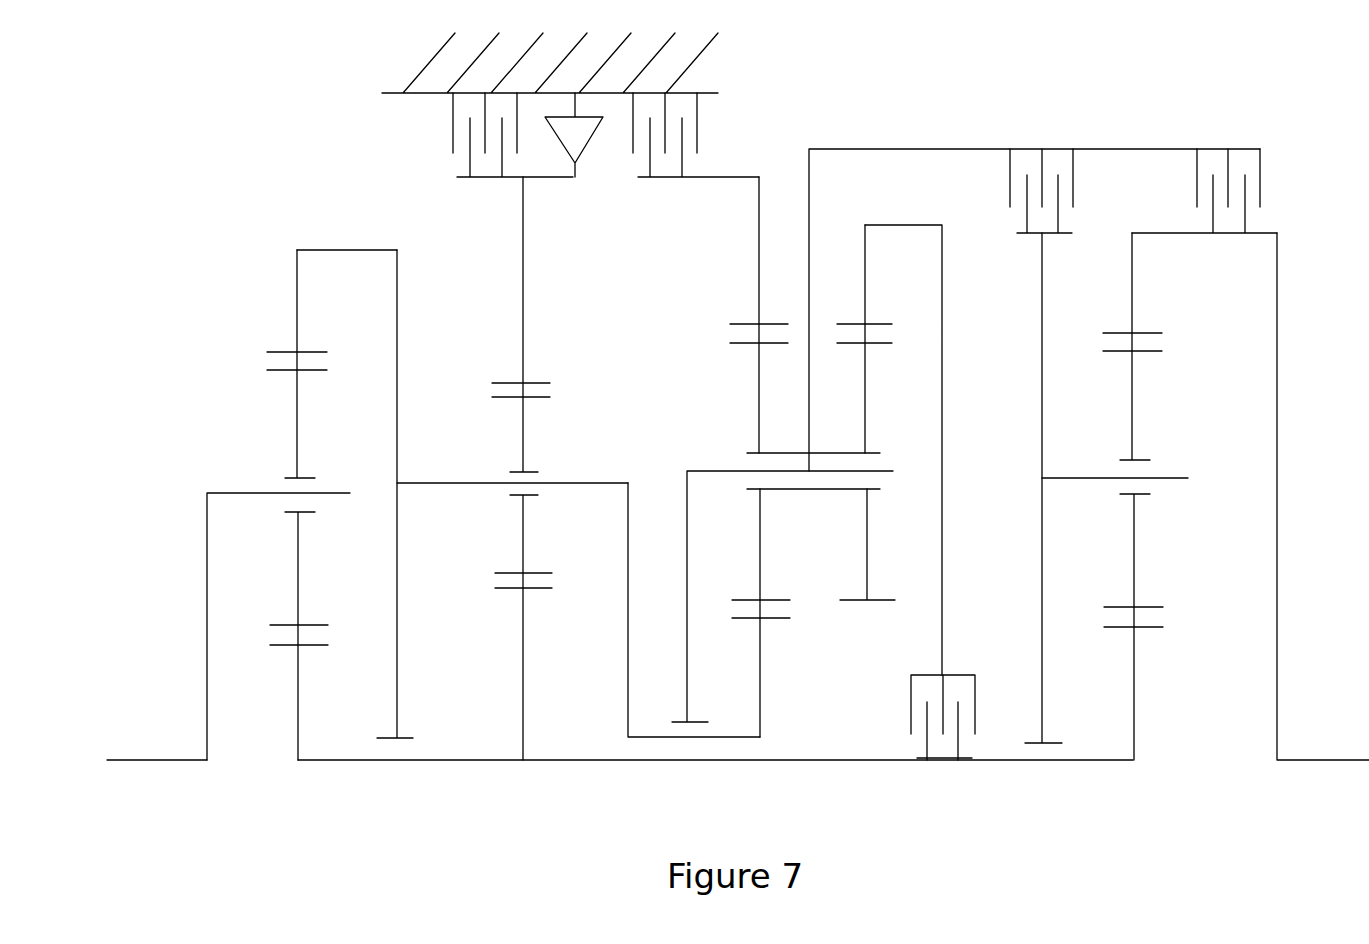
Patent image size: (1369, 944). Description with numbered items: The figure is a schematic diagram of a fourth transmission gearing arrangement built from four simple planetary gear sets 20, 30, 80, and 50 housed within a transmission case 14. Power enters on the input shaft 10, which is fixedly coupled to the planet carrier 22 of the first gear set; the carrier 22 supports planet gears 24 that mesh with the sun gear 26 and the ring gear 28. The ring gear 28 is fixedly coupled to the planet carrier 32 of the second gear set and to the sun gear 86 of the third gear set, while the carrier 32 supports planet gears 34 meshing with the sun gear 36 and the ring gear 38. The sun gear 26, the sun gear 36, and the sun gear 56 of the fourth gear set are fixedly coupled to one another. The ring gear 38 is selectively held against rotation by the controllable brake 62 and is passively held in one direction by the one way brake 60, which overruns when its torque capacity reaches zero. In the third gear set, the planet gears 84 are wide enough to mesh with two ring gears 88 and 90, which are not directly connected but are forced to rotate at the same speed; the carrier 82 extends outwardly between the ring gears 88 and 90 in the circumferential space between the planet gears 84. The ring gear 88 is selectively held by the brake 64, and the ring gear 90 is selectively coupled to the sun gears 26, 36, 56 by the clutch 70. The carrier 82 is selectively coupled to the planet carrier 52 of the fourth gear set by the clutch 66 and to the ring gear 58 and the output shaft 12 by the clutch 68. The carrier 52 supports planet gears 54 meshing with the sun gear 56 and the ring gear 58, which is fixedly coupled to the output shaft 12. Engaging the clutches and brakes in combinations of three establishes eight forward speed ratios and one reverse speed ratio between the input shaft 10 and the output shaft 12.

The input shaft 10 is at (147, 760).
The output shaft 12 is at (1337, 762).
The transmission case 14 is at (442, 48).
The planetary gear set 20 is at (301, 535).
The planet carrier 22 is at (207, 558).
The planet gears 24 is at (300, 438).
The sun gear 26 is at (300, 690).
The ring gear 28 is at (297, 305).
The planetary gear set 30 is at (512, 498).
The planet carrier 32 is at (398, 407).
The planet gears 34 is at (525, 440).
The sun gear 36 is at (523, 633).
The ring gear 38 is at (523, 320).
The planetary gear set 50 is at (1094, 526).
The planet carrier 52 is at (1042, 533).
The planet gears 54 is at (1135, 420).
The sun gear 56 is at (1134, 670).
The ring gear 58 is at (1132, 288).
The one way brake 60 is at (593, 130).
The controllable brake 62 is at (453, 136).
The brake 64 is at (697, 128).
The clutch 66 is at (1013, 182).
The clutch 68 is at (1262, 172).
The clutch 70 is at (910, 705).
The planetary gear set 80 is at (944, 484).
The carrier 82 is at (687, 500).
The planet gears 84 is at (863, 397).
The sun gear 86 is at (760, 660).
The ring gear 88 is at (760, 280).
The ring gear 90 is at (865, 290).